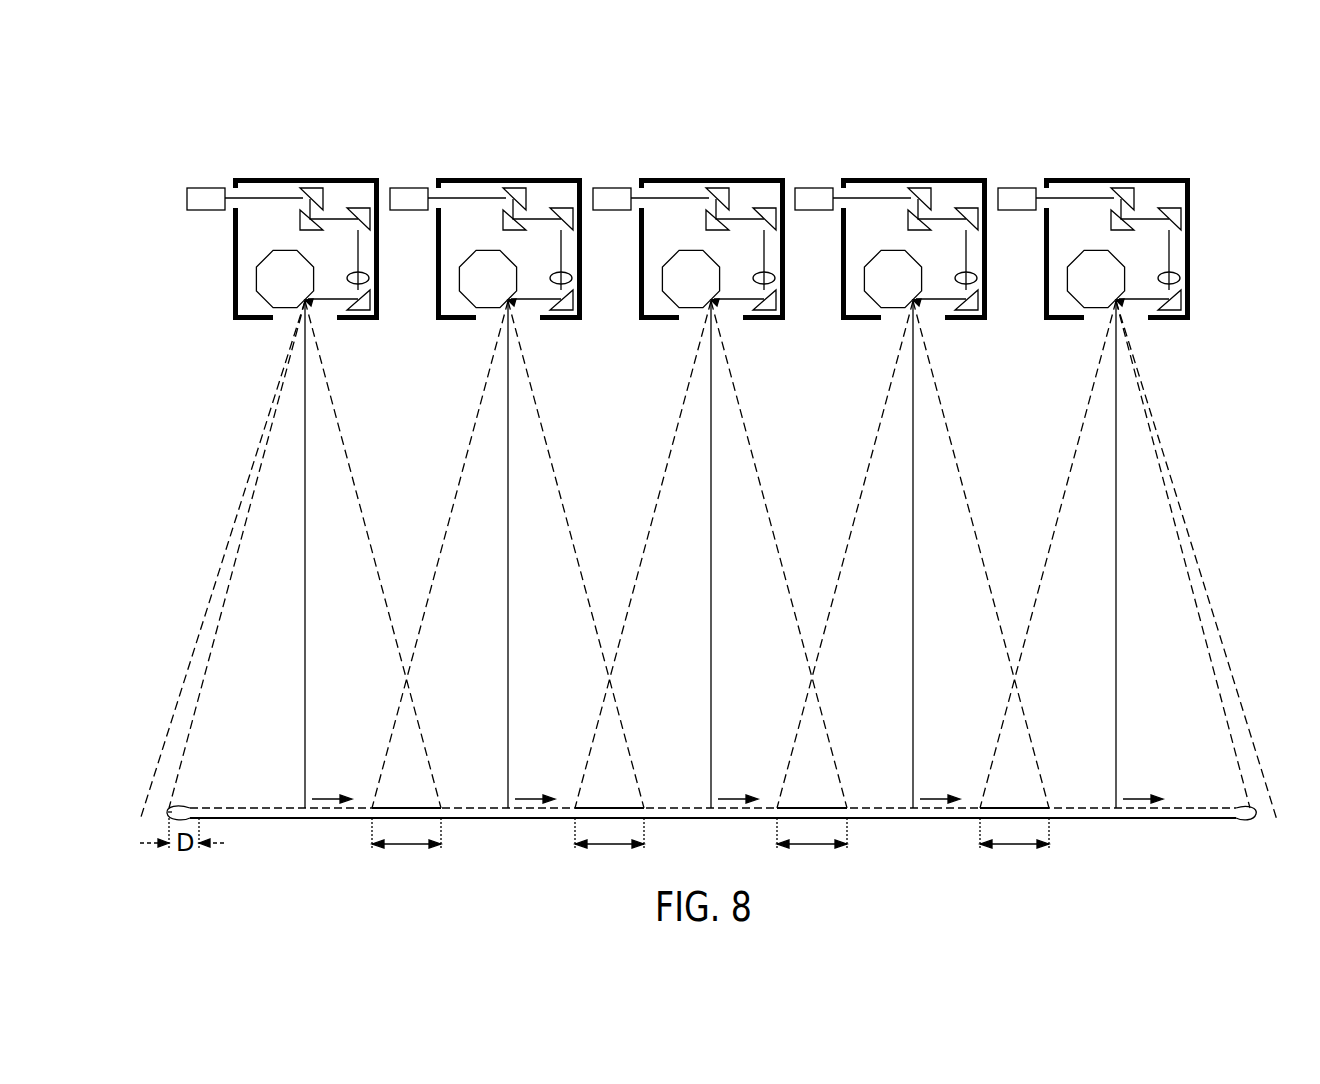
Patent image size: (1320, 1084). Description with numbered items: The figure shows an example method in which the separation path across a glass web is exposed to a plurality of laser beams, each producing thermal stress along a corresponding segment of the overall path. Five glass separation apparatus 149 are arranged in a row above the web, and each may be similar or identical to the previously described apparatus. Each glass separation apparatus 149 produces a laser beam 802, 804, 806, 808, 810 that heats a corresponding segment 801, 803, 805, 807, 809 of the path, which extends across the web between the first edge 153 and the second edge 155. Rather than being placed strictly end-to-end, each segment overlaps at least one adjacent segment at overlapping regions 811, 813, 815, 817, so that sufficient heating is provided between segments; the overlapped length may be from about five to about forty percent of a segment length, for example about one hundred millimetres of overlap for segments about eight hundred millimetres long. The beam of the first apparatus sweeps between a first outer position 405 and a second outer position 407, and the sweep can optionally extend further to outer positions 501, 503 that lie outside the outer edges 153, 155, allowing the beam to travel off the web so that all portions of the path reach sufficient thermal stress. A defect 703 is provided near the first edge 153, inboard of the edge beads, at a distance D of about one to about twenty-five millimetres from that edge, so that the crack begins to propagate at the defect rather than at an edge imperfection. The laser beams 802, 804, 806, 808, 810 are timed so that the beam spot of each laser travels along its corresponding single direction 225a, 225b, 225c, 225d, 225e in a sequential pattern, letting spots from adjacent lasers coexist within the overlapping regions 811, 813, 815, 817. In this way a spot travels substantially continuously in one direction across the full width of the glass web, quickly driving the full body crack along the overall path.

The glass separation apparatus 149 is at (687, 205).
The first edge 153 is at (168, 812).
The second edge 155 is at (1252, 822).
The single direction 225a is at (332, 797).
The single direction 225b is at (535, 797).
The single direction 225c is at (738, 797).
The single direction 225d is at (940, 797).
The single direction 225e is at (1143, 797).
The first outer position 405 is at (222, 618).
The second outer position 407 is at (1222, 697).
The outer position 501 is at (205, 625).
The outer position 503 is at (1215, 612).
The defect 703 is at (200, 807).
The segment 801 is at (254, 807).
The laser beam 802 is at (306, 612).
The segment 803 is at (460, 805).
The laser beam 804 is at (509, 612).
The segment 805 is at (665, 805).
The laser beam 806 is at (712, 612).
The segment 807 is at (867, 805).
The laser beam 808 is at (914, 612).
The segment 809 is at (1073, 805).
The laser beam 810 is at (1117, 612).
The overlapping region 811 is at (407, 846).
The overlapping region 813 is at (610, 846).
The overlapping region 815 is at (812, 846).
The overlapping region 817 is at (1015, 846).